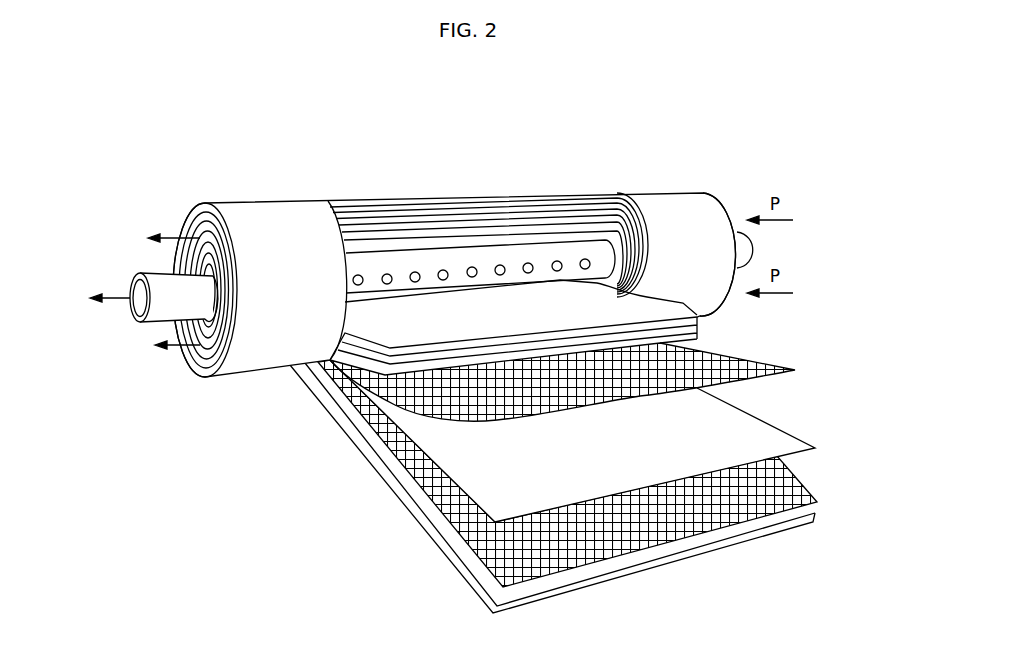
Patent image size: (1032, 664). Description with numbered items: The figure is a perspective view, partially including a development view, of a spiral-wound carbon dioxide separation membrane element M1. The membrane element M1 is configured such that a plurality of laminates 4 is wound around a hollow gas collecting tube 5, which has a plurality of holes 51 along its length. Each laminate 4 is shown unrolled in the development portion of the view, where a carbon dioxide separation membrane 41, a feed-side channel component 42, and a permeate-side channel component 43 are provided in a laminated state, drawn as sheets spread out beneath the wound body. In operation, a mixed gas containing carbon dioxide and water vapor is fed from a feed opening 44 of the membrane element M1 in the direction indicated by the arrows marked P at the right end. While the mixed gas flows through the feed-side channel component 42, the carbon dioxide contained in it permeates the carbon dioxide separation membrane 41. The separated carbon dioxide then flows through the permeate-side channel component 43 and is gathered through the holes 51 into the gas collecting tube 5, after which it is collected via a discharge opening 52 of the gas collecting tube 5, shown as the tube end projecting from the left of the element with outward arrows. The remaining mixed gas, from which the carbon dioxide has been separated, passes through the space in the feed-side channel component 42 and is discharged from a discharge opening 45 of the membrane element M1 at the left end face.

The membrane element M1 is at (667, 173).
The laminate 4 is at (798, 304).
The carbon dioxide separation membrane 41 is at (755, 442).
The feed-side channel component 42 is at (803, 490).
The permeate-side channel component 43 is at (730, 362).
The feed opening 44 is at (735, 205).
The discharge opening 45 is at (187, 366).
The gas collecting tube 5 is at (402, 265).
The holes 51 is at (476, 265).
The discharge opening 52 is at (122, 283).